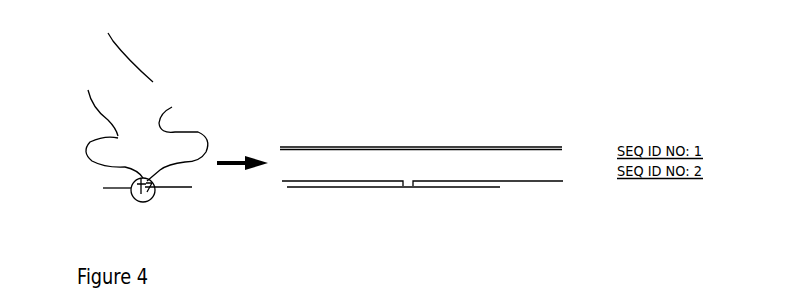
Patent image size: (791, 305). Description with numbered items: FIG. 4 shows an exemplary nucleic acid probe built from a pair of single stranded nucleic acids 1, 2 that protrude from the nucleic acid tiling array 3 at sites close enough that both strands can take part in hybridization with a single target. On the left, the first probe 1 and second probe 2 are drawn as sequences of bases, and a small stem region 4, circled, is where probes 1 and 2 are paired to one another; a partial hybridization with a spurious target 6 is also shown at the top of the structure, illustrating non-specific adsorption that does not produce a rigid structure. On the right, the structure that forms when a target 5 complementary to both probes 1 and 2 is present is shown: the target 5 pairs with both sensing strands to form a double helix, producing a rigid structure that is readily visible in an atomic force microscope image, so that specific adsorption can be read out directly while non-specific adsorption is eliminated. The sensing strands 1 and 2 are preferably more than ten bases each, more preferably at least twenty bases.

The first single stranded nucleic acid probe 1 is at (239, 130).
The second single stranded nucleic acid probe 2 is at (188, 96).
The nucleic acid tiling array 3 is at (333, 194).
The stem region 4 is at (134, 203).
The target 5 is at (421, 146).
The spurious target 6 is at (176, 80).